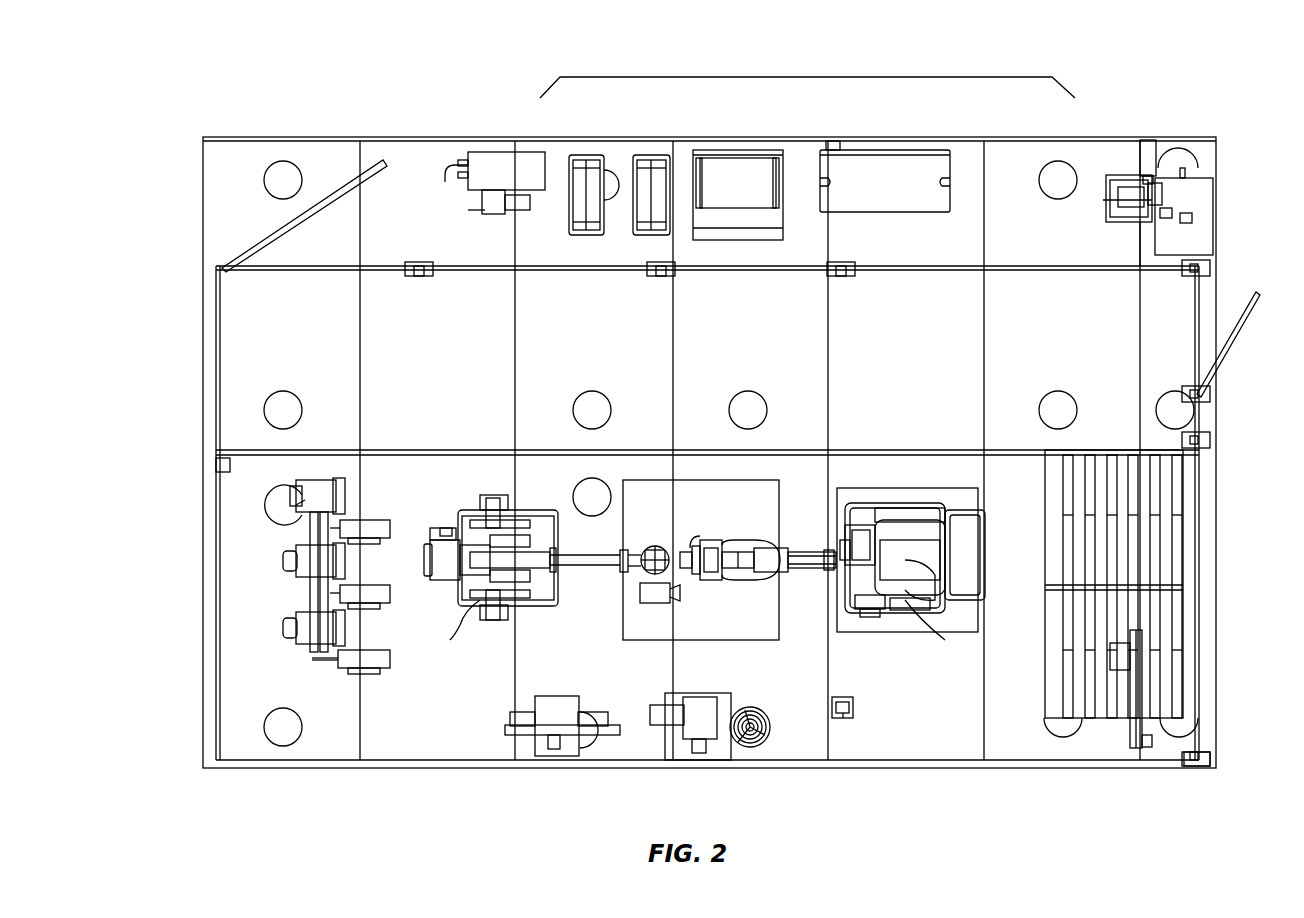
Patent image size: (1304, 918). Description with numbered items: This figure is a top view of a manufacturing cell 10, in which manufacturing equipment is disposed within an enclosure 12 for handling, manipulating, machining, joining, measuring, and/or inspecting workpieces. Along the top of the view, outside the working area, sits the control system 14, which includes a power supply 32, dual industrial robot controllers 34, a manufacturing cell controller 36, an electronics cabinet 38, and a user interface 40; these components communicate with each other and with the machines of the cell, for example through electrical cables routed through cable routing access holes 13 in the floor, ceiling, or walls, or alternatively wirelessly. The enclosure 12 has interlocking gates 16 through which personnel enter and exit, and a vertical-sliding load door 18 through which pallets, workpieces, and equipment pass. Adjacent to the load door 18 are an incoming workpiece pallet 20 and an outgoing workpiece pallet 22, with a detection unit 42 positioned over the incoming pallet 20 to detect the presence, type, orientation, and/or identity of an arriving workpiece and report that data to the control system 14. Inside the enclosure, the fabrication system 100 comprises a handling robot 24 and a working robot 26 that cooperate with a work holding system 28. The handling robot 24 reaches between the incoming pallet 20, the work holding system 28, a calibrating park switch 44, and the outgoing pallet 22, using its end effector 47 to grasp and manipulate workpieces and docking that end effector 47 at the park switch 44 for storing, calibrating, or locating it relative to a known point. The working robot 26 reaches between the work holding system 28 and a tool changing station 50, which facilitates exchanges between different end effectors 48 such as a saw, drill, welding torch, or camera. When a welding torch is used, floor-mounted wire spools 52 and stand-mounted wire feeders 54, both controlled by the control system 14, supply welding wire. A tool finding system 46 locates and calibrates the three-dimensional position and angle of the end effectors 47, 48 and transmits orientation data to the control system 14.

The manufacturing cell 10 is at (240, 112).
The enclosure 12 is at (205, 362).
The cable routing access holes 13 is at (264, 183).
The control system 14 is at (795, 77).
The interlocking gates 16 is at (356, 186).
The vertical-sliding load door 18 is at (1200, 735).
The incoming workpiece pallet 20 is at (1154, 584).
The outgoing workpiece pallet 22 is at (1180, 518).
The handling robot 24 is at (910, 605).
The working robot 26 is at (470, 595).
The work holding system 28 is at (698, 490).
The power supply 32 is at (540, 160).
The dual industrial robot controllers 34 is at (648, 155).
The manufacturing cell controller 36 is at (735, 165).
The electronics cabinet 38 is at (890, 165).
The user interface 40 is at (1195, 185).
The detection unit 42 is at (1120, 660).
The calibrating park switch 44 is at (843, 720).
The tool finding system 46 is at (700, 745).
The end effector 47 is at (705, 536).
The end effector 48 is at (652, 596).
The tool changing station 50 is at (558, 740).
The floor-mounted wire spools 52 is at (368, 674).
The stand-mounted wire feeders 54 is at (300, 645).
The fabrication system 100 is at (527, 445).